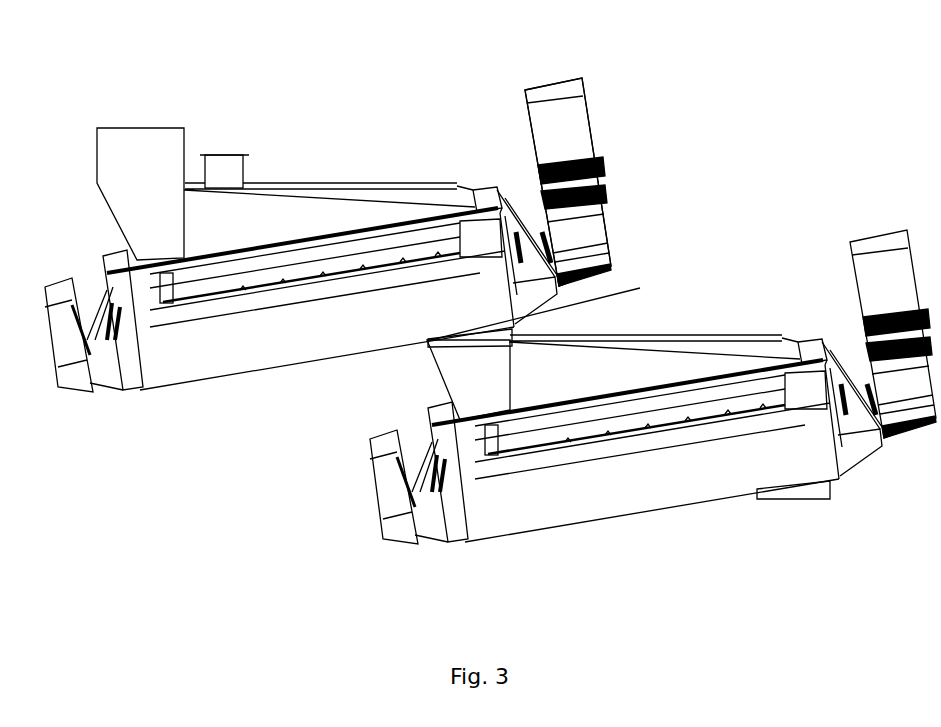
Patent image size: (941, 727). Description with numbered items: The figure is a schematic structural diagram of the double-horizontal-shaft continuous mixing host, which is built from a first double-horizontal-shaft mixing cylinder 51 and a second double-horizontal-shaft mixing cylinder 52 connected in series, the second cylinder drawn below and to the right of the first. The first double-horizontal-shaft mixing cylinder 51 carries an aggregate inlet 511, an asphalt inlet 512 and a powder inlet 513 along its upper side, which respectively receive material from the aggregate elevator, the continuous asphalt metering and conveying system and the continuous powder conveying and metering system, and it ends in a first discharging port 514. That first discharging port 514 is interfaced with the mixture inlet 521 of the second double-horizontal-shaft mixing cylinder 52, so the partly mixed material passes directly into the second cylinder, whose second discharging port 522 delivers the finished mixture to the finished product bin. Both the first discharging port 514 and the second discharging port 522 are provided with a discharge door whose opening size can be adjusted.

The first double-horizontal-shaft mixing cylinder 51 is at (263, 369).
The aggregate inlet 511 is at (140, 150).
The asphalt inlet 512 is at (222, 172).
The powder inlet 513 is at (358, 183).
The first discharging port 514 is at (480, 337).
The second double-horizontal-shaft mixing cylinder 52 is at (620, 519).
The mixture inlet 521 is at (472, 368).
The second discharging port 522 is at (793, 490).